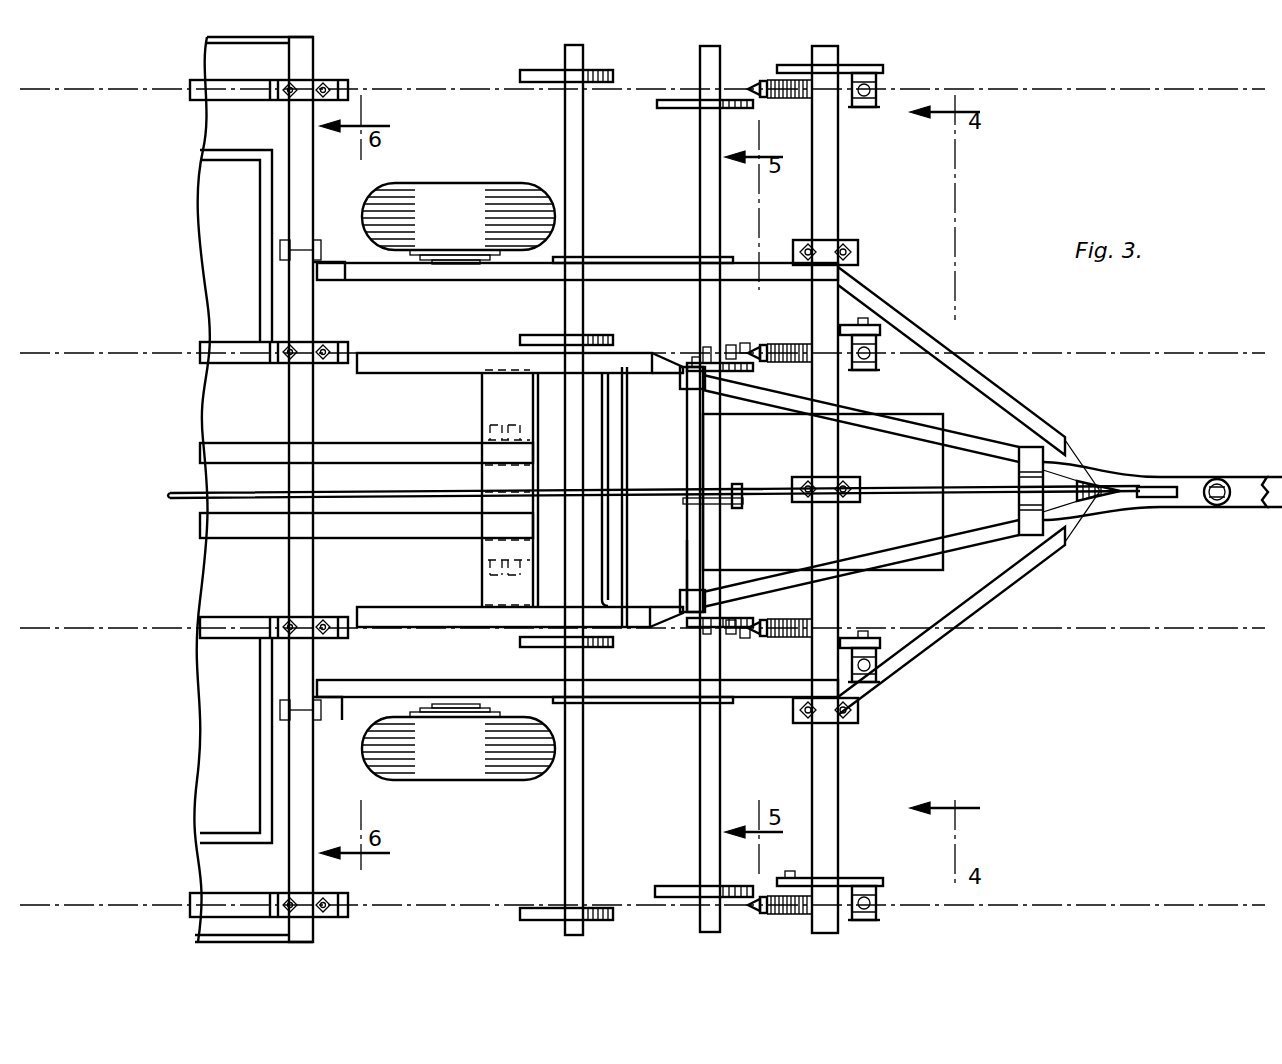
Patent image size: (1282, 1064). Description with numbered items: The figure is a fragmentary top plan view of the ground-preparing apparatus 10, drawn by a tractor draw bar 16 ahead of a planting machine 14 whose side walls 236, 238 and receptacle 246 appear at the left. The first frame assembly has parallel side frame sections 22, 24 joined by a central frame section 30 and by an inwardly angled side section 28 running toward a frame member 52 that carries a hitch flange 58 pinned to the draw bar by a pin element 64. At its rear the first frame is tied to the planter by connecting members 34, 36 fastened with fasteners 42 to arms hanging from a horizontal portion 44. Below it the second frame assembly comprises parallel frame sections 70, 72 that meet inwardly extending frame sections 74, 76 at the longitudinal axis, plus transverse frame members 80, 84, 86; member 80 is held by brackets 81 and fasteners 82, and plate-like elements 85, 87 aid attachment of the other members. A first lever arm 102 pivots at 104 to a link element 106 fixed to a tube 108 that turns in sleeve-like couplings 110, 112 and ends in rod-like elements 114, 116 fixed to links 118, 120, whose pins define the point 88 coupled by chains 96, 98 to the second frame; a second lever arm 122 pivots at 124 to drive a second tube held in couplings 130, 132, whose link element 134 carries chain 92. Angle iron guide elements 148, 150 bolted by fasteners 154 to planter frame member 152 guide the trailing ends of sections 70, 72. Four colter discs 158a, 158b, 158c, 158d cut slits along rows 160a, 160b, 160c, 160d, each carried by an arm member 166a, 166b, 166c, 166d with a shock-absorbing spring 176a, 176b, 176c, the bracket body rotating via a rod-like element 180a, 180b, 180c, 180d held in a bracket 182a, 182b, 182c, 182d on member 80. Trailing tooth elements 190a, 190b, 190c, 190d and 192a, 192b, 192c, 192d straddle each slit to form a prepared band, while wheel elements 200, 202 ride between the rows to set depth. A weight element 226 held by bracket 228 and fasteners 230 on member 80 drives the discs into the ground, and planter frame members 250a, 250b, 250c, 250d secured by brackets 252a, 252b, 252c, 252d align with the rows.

The apparatus 10 is at (897, 70).
The planting machine 14 is at (182, 173).
The draw bar 16 is at (1262, 475).
The side frame section 22 is at (430, 627).
The side frame section 24 is at (425, 353).
The inwardly angularly extending side section 28 is at (985, 445).
The central frame section 30 is at (625, 430).
The connecting member 34 is at (385, 555).
The connecting member 36 is at (385, 446).
The bolt and nut type fastener 42 is at (485, 425).
The horizontal portion 44 is at (485, 395).
The frame member 52 is at (1165, 500).
The flange 58 is at (1192, 478).
The pin element 64 is at (1225, 505).
The frame section 70 is at (605, 697).
The frame section 72 is at (605, 263).
The inwardly extending frame section 74 is at (962, 620).
The inwardly extending frame section 76 is at (862, 287).
The transverse frame member 80 is at (838, 768).
The bracket 81 is at (858, 250).
The fastener 82 is at (815, 240).
The transverse frame member 84 is at (700, 768).
The plate-like element 85 is at (645, 703).
The transverse frame member 86 is at (565, 130).
The plate-like element 87 is at (670, 240).
The point 88 is at (743, 343).
The chain 92 is at (1097, 480).
The chain 96 is at (733, 620).
The chain 98 is at (731, 345).
The first lever arm 102 is at (172, 493).
The pivot connection 104 is at (738, 486).
The link element 106 is at (690, 510).
The rod or tube 108 is at (687, 460).
The sleeve-like coupling 110 is at (690, 545).
The sleeve-like coupling 112 is at (683, 388).
The rod-like element 114 is at (688, 612).
The rod-like element 116 is at (694, 345).
The link element 118 is at (683, 635).
The link element 120 is at (698, 357).
The second lever arm 122 is at (880, 490).
The pivot connection 124 is at (1078, 470).
The sleeve-like coupling 130 is at (1050, 540).
The sleeve-like coupling 132 is at (1040, 450).
The link element 134 is at (1072, 510).
The angle iron guide element 148 is at (292, 720).
The angle iron guide element 150 is at (320, 280).
The frame member 152 is at (289, 415).
The bolt and nut type fastener 154 is at (292, 260).
The colter disc 158a is at (760, 908).
The colter disc 158b is at (790, 615).
The colter disc 158c is at (785, 343).
The colter disc 158d is at (745, 88).
The row 160a is at (1230, 906).
The row 160b is at (1225, 632).
The row 160c is at (1230, 356).
The row 160d is at (1225, 92).
The arm member 166a is at (855, 878).
The arm member 166b is at (845, 638).
The arm member 166c is at (865, 325).
The arm member 166d is at (805, 65).
The spring 176a is at (790, 871).
The spring 176b is at (862, 648).
The spring 176c is at (858, 322).
The rod-like element 180a is at (878, 895).
The rod-like element 180b is at (878, 662).
The rod-like element 180c is at (878, 360).
The rod-like element 180d is at (878, 92).
The bracket 182a is at (870, 922).
The bracket 182b is at (865, 682).
The bracket 182c is at (862, 370).
The bracket 182d is at (862, 108).
The tooth element 190a is at (668, 886).
The tooth element 190b is at (672, 618).
The tooth element 190c is at (690, 363).
The tooth element 190d is at (672, 108).
The tooth element 192a is at (520, 918).
The tooth element 192b is at (553, 647).
The tooth element 192c is at (553, 335).
The tooth element 192d is at (525, 76).
The wheel element 200 is at (437, 780).
The wheel element 202 is at (425, 190).
The weight element 226 is at (965, 548).
The bracket 228 is at (820, 414).
The bolt and nut type fastener 230 is at (850, 460).
The side wall 236 is at (200, 942).
The side wall 238 is at (218, 40).
The bin or receptacle 246 is at (255, 200).
The frame member 250a is at (215, 893).
The frame member 250b is at (210, 617).
The frame member 250c is at (215, 363).
The frame member 250d is at (232, 95).
The bracket 252a is at (305, 893).
The bracket 252b is at (305, 617).
The bracket 252c is at (310, 363).
The bracket 252d is at (322, 85).